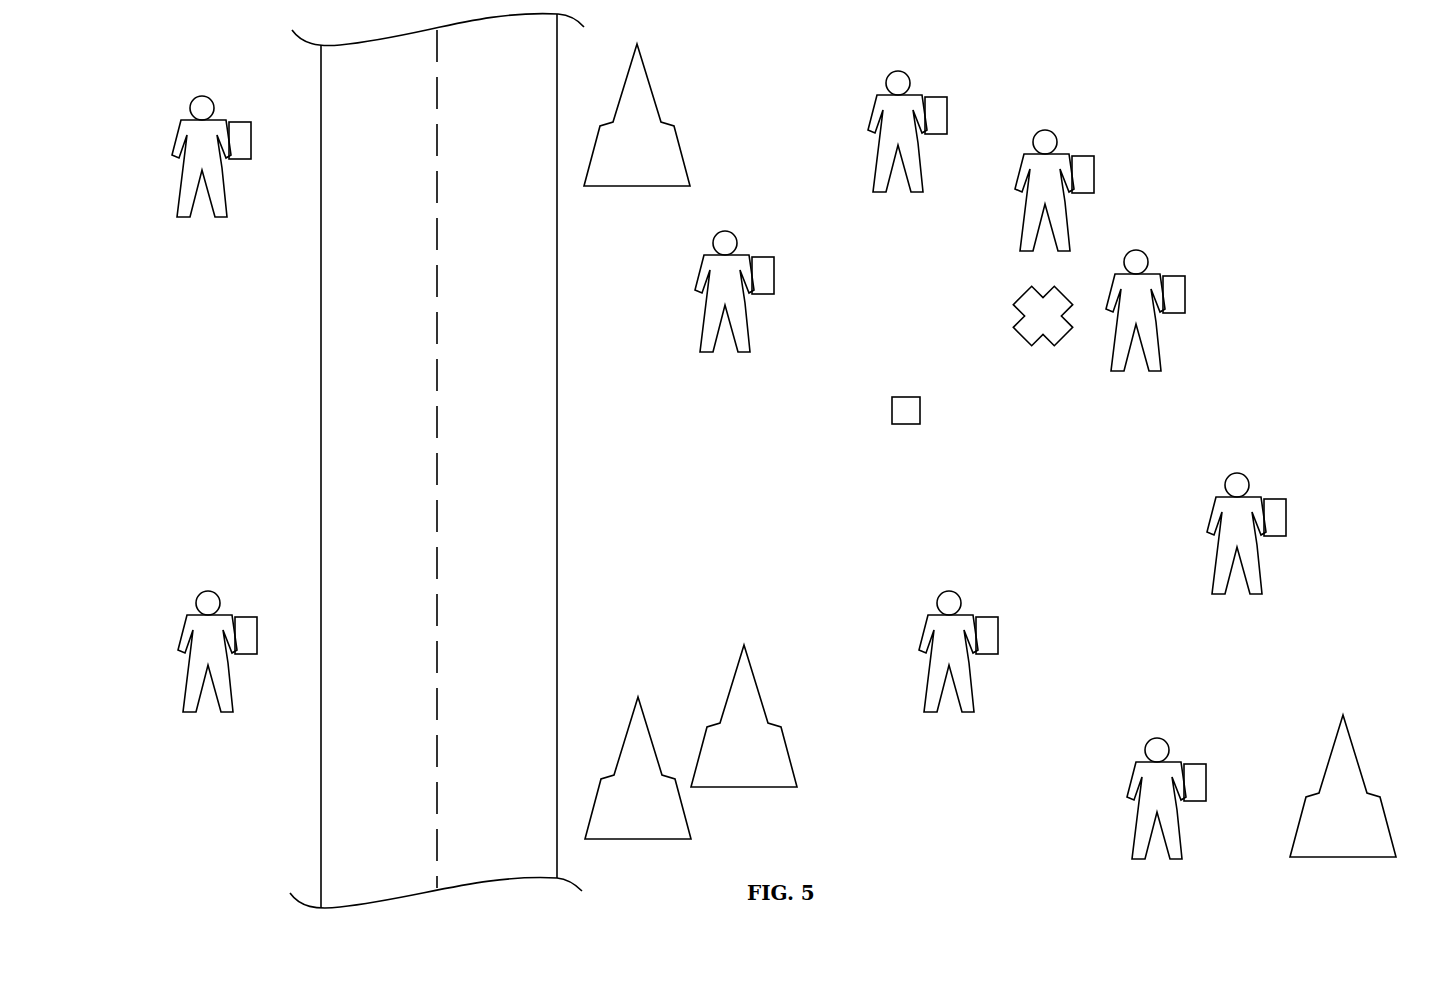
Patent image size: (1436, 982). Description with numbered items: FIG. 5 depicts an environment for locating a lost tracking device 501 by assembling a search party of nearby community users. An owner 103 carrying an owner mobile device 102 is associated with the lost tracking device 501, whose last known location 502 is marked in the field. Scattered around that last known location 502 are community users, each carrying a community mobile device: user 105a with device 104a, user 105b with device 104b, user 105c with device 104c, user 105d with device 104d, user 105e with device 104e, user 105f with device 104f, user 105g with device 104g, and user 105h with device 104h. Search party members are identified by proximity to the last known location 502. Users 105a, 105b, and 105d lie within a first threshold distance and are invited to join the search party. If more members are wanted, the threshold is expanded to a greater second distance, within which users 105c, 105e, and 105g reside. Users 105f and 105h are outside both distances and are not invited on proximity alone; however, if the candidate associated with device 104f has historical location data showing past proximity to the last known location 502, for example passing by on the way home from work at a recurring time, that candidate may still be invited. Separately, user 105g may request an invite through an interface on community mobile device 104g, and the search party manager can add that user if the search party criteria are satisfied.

The owner mobile device 102 is at (252, 154).
The owner 103 is at (201, 171).
The candidate search party member device 104a is at (945, 130).
The candidate search party member device 104b is at (1092, 189).
The candidate search party member device 104c is at (772, 290).
The candidate search party member device 104d is at (1183, 309).
The candidate search party member device 104e is at (1284, 532).
The candidate search party member device 104f is at (253, 650).
The community mobile device 104g is at (996, 650).
The candidate search party member device 104h is at (1204, 797).
The user 105a is at (897, 145).
The user 105b is at (1044, 204).
The user 105c is at (724, 305).
The user 105d is at (1135, 324).
The user 105e is at (1236, 547).
The user 105f is at (207, 665).
The user 105g is at (948, 665).
The user 105h is at (1156, 812).
The lost tracking device 501 is at (908, 444).
The last known location 502 is at (1044, 336).